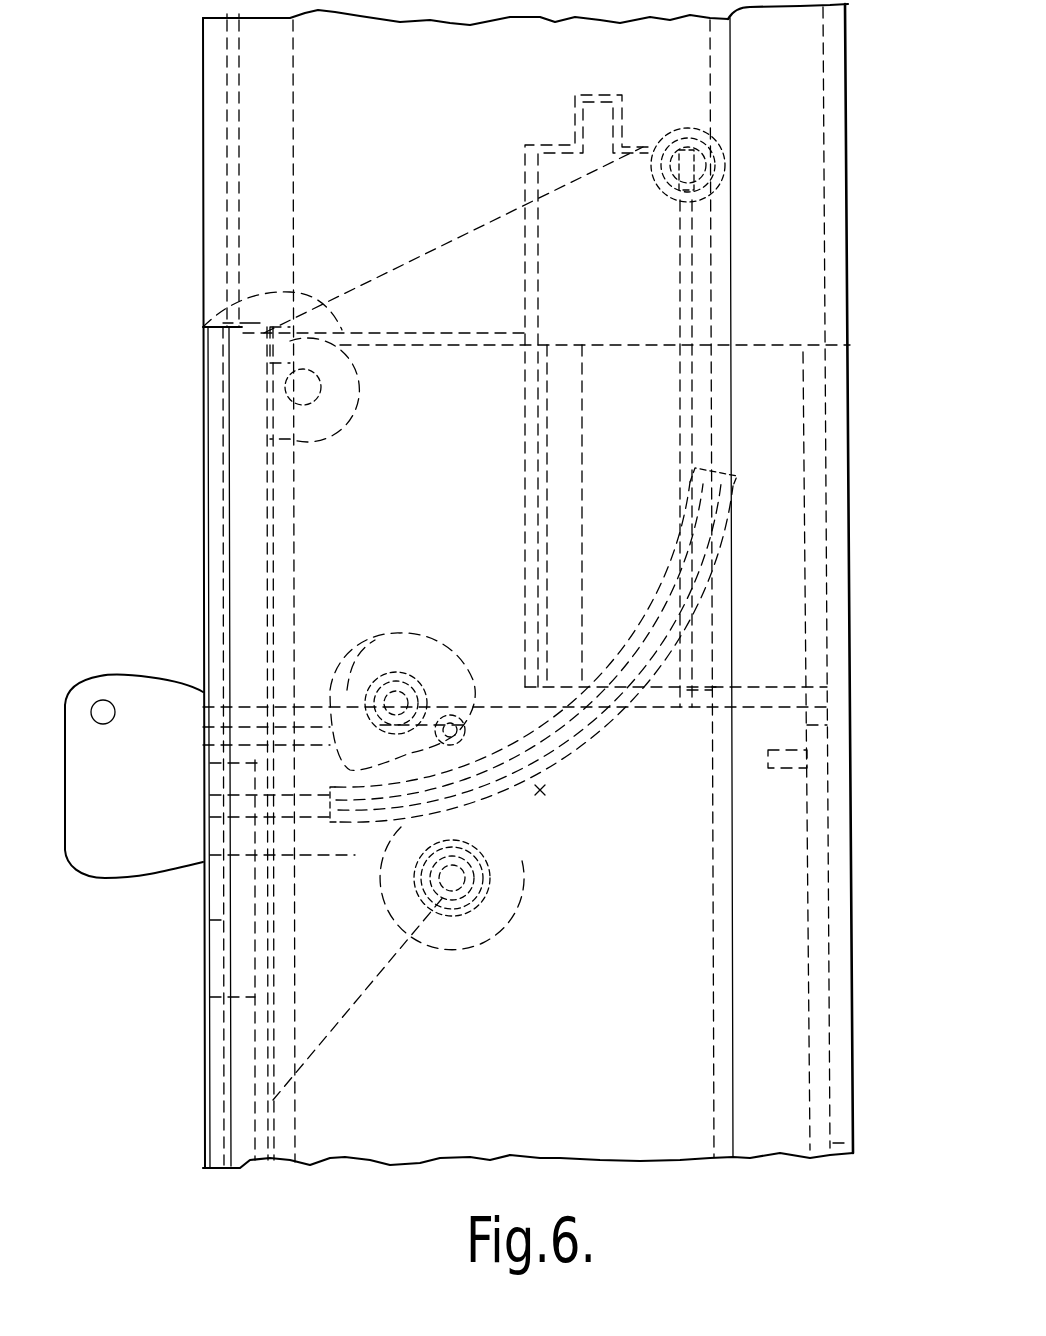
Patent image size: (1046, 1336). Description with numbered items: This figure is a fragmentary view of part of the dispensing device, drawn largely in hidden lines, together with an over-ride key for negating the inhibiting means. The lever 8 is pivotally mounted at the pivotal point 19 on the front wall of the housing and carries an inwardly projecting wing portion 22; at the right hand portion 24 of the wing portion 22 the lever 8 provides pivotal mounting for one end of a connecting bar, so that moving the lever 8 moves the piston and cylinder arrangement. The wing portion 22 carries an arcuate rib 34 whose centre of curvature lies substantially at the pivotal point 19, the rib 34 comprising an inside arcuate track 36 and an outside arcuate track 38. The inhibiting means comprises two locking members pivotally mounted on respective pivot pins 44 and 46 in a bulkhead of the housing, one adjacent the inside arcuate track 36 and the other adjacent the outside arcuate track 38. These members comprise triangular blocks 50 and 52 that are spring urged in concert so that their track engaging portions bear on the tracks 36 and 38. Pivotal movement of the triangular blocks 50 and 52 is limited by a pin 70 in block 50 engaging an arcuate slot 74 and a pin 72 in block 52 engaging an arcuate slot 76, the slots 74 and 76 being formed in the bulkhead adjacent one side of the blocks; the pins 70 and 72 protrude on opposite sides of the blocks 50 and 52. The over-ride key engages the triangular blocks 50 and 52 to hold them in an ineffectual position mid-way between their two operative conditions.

The lever 8 is at (222, 1055).
The pivotal point 19 is at (313, 378).
The wing portion 22 is at (470, 237).
The right hand portion 24 is at (623, 192).
The arcuate rib 34 is at (712, 562).
The inside arcuate track 36 is at (690, 487).
The outside arcuate track 38 is at (662, 655).
The pivot pin 44 is at (455, 650).
The pivot pin 46 is at (450, 878).
The triangular block 50 is at (405, 690).
The triangular block 52 is at (492, 940).
The pin 70 is at (465, 716).
The pin 72 is at (541, 790).
The arcuate slot 74 is at (422, 740).
The arcuate slot 76 is at (417, 840).